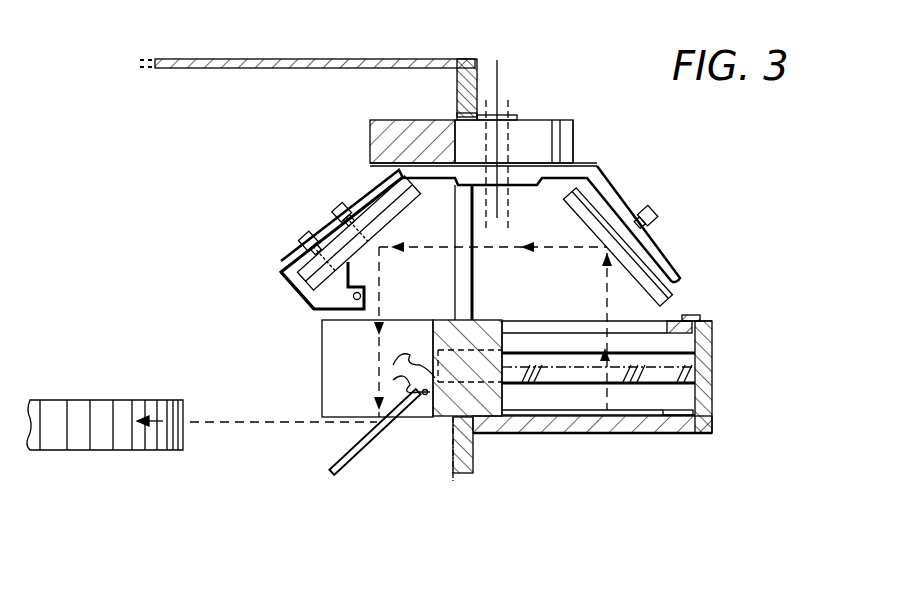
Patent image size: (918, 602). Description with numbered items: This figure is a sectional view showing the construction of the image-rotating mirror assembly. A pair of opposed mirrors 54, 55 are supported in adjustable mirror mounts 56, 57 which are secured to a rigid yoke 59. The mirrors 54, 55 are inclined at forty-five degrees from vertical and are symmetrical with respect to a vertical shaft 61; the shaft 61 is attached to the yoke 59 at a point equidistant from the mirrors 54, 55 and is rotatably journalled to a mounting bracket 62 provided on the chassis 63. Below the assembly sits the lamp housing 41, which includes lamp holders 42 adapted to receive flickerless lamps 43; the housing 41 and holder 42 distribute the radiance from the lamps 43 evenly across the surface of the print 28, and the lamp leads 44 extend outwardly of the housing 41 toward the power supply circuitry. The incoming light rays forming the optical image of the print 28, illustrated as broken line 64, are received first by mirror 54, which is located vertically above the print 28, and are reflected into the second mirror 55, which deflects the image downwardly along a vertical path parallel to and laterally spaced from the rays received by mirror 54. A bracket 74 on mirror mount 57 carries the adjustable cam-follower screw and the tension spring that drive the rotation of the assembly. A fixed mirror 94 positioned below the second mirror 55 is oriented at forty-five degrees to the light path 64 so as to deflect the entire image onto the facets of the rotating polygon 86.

The print 28 is at (713, 397).
The lamp housing 41 is at (728, 353).
The lamp holder 42 is at (490, 407).
The fluorescent lamp 43 is at (592, 377).
The lamp lead 44 is at (393, 380).
The mirror 54 is at (640, 270).
The mirror 55 is at (402, 210).
The mirror mount 56 is at (617, 205).
The mirror mount 57 is at (377, 193).
The yoke 59 is at (518, 172).
The vertical shaft 61 is at (510, 115).
The mounting bracket 62 is at (573, 137).
The chassis 63 is at (477, 62).
The light path 64 is at (607, 321).
The bracket 74 is at (292, 257).
The polygon 86 is at (80, 400).
The fixed mirror 94 is at (363, 450).